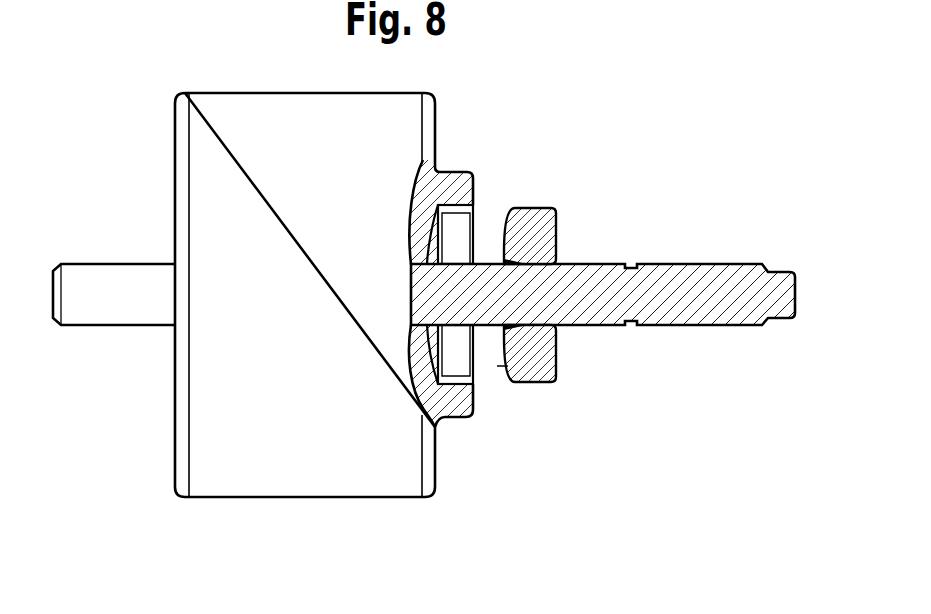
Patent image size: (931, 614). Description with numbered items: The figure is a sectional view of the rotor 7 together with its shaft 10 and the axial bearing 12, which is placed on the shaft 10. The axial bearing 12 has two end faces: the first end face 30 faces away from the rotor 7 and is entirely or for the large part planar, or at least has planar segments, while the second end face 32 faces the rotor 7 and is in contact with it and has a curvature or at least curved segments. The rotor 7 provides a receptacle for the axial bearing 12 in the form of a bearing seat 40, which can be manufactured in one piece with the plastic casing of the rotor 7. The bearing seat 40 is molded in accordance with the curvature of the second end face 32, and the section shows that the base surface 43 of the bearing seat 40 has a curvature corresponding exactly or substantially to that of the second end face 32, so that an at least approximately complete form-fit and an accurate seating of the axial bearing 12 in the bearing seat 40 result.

The rotor 7 is at (332, 461).
The shaft 10 is at (688, 287).
The axial bearing 12 is at (535, 235).
The first end face 30 is at (557, 353).
The second end face 32 is at (508, 366).
The bearing seat 40 is at (426, 196).
The base surface 43 is at (440, 206).